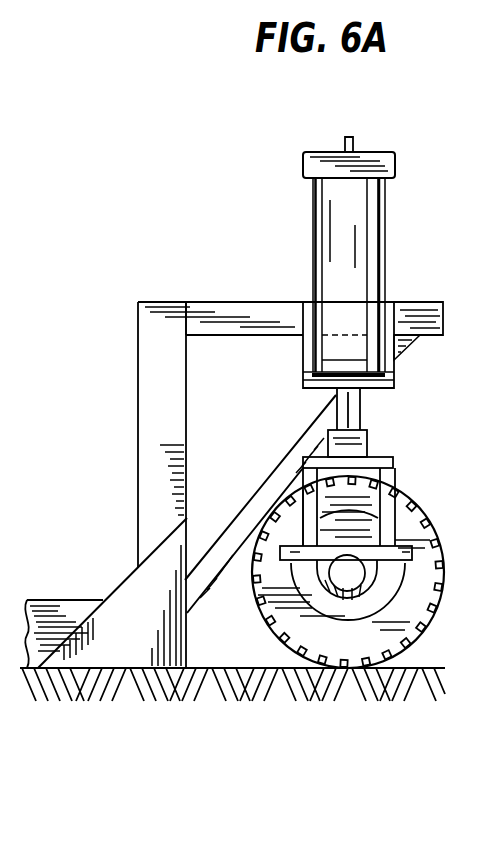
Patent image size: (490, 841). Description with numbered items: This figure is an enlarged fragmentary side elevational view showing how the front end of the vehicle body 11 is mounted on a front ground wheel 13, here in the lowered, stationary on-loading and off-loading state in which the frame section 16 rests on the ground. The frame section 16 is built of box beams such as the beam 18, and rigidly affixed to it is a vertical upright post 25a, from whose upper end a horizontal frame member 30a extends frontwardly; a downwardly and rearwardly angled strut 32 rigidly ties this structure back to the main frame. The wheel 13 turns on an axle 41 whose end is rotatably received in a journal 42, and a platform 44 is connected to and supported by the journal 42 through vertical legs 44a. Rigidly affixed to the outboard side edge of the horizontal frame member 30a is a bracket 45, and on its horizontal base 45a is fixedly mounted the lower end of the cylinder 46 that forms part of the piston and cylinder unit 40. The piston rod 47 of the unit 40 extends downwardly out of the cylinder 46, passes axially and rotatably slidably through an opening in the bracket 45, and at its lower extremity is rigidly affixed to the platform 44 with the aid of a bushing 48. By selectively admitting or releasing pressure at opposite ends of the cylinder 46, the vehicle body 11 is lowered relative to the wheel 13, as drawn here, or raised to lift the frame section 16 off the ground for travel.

The vehicle body 11 is at (148, 299).
The wheel 13 is at (428, 526).
The frame section 16 is at (99, 592).
The beam 18 is at (80, 590).
The vertical upright post 25a is at (150, 431).
The horizontal frame member 30a is at (233, 292).
The strut 32 is at (208, 590).
The piston and cylinder unit 40 is at (397, 238).
The axle 41 is at (347, 580).
The journal 42 is at (372, 585).
The platform 44 is at (382, 458).
The vertical leg 44a is at (276, 488).
The bracket 45 is at (402, 346).
The horizontal base 45a is at (385, 392).
The cylinder 46 is at (330, 240).
The piston rod 47 is at (338, 400).
The bushing 48 is at (316, 430).